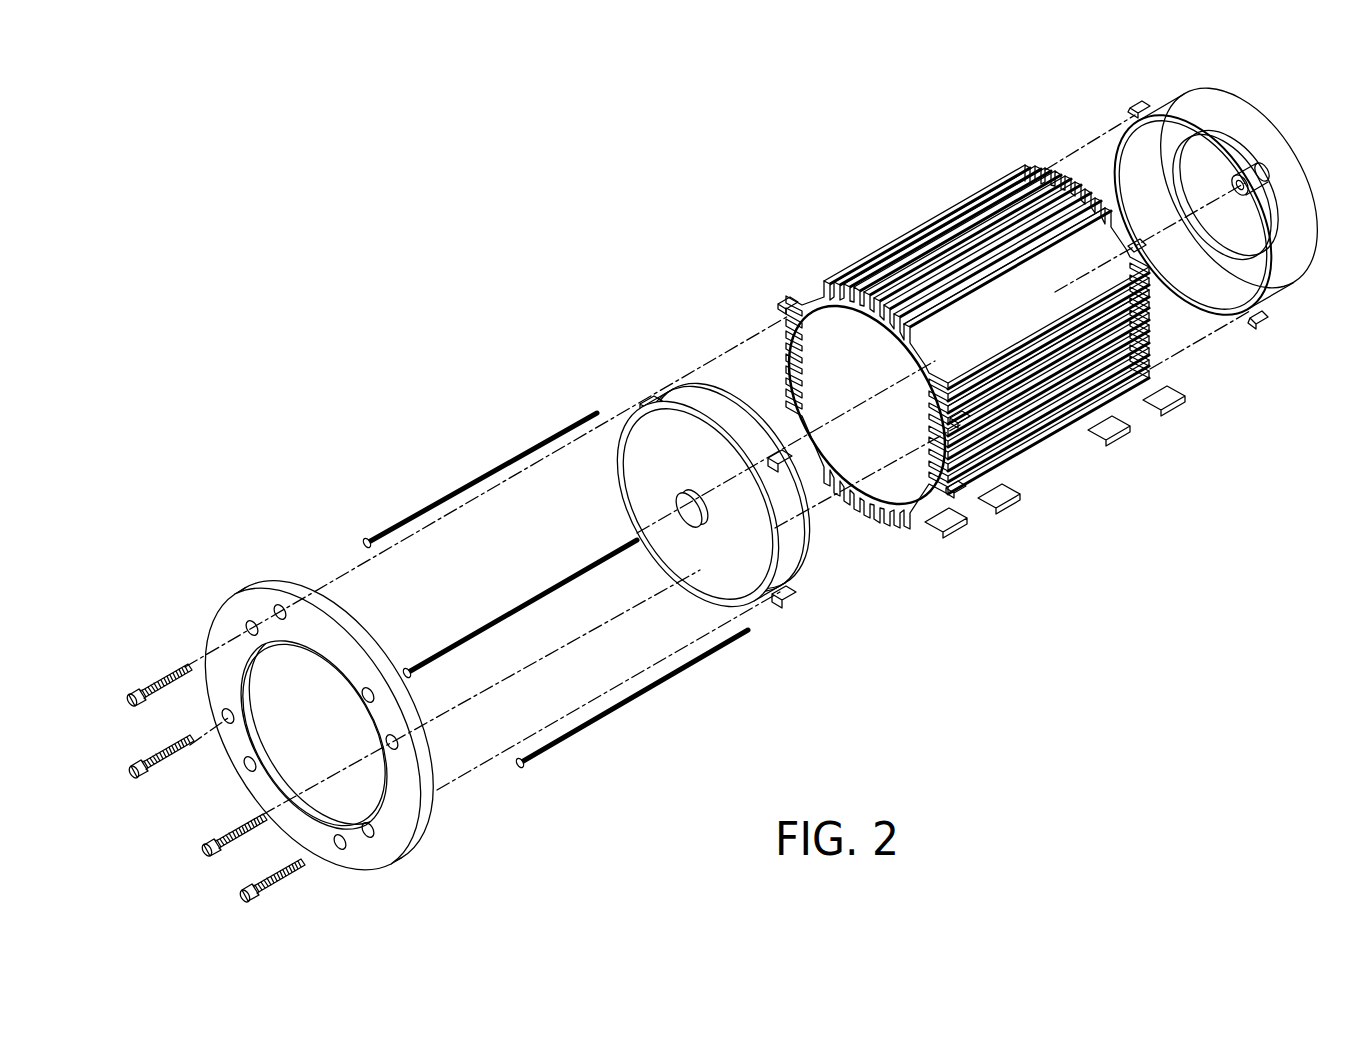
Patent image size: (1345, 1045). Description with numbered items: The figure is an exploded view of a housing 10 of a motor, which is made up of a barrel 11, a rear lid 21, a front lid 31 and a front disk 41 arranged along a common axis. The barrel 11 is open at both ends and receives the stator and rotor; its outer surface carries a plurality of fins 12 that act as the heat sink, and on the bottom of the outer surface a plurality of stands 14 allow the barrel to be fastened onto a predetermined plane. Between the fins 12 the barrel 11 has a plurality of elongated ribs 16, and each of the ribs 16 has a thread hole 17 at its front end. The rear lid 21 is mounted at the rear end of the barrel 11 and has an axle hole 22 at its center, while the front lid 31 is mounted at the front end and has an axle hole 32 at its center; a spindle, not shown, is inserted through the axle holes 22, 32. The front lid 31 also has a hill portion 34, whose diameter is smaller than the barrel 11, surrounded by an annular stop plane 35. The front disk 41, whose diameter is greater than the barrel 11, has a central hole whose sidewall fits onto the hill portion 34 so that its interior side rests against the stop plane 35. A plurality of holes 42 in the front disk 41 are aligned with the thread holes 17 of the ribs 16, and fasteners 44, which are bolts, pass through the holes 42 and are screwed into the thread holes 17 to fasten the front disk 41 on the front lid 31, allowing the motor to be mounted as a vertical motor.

The housing 10 is at (721, 467).
The barrel 11 is at (972, 349).
The fins 12 is at (1030, 185).
The stands 14 is at (1122, 436).
The elongated ribs 16 is at (960, 215).
The thread hole 17 is at (1000, 430).
The rear lid 21 is at (1213, 186).
The axle hole 22 is at (1240, 181).
The front lid 31 is at (708, 463).
The axle hole 32 is at (685, 522).
The hill portion 34 is at (735, 568).
The annular stop plane 35 is at (774, 589).
The front disk 41 is at (288, 718).
The holes 42 is at (279, 608).
The fasteners 44 is at (185, 670).